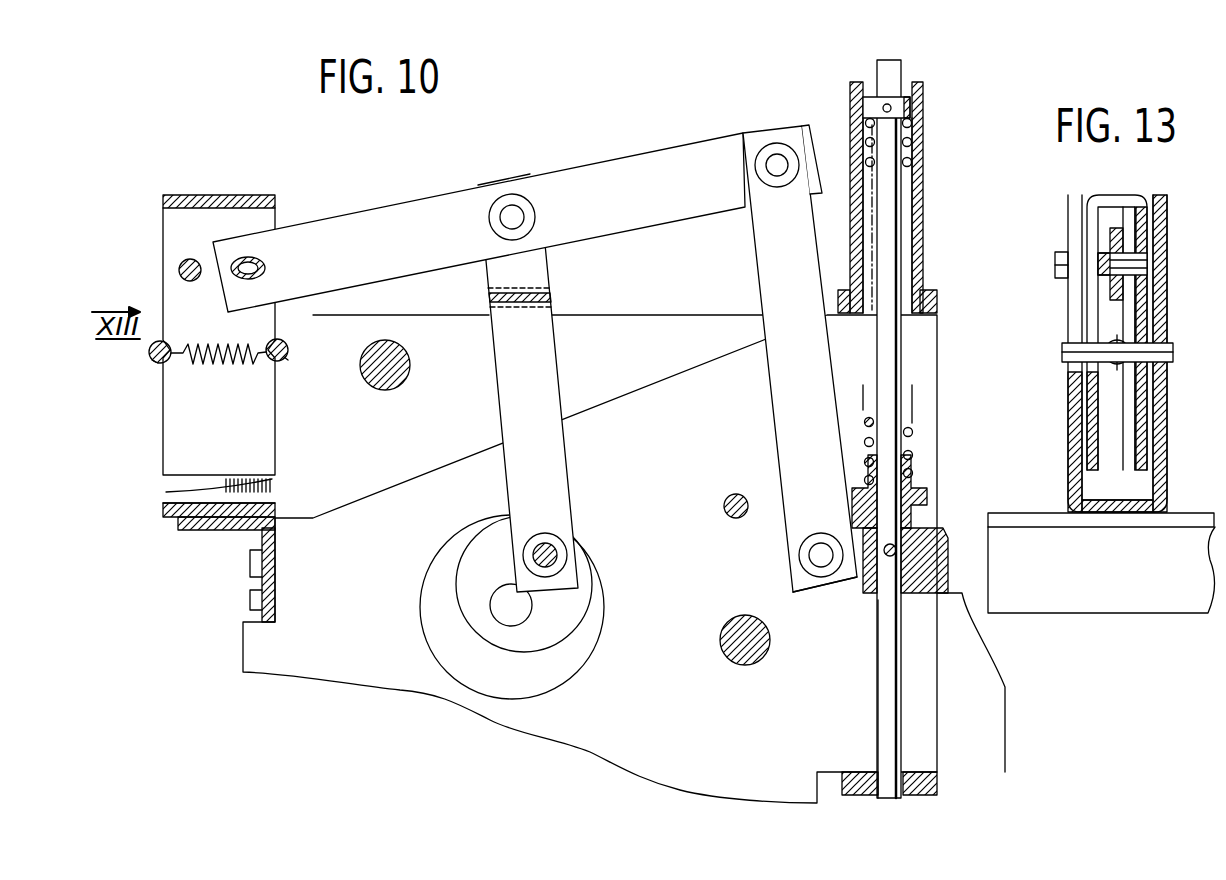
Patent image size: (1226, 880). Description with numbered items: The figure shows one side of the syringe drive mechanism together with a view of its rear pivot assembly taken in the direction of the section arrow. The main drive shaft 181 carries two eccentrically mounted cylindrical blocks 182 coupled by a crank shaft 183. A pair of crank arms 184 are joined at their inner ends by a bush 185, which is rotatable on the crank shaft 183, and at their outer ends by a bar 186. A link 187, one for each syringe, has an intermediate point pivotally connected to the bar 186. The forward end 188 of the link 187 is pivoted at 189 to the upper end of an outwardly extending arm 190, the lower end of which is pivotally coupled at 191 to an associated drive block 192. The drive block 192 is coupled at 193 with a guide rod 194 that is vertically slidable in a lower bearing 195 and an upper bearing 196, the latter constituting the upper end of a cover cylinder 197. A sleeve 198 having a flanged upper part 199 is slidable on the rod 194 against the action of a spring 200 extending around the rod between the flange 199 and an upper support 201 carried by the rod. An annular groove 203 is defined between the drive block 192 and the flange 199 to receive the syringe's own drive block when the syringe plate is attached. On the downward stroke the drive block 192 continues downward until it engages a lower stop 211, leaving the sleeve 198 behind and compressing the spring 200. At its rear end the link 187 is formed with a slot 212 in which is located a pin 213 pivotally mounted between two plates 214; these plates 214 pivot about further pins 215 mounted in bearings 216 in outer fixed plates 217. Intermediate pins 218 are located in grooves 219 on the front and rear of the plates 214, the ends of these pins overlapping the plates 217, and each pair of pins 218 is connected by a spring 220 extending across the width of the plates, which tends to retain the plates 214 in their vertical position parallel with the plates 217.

In FIG. 10, the main drive shaft 181 is at (507, 611).
In FIG. 10, the eccentrically mounted cylindrical block 182 is at (566, 613).
In FIG. 10, the crank shaft 183 is at (560, 552).
In FIG. 10, the crank arm 184 is at (546, 500).
In FIG. 10, the bush 185 is at (552, 545).
In FIG. 10, the bar 186 is at (512, 215).
In FIG. 10, the link 187 is at (619, 170).
In FIG. 13, the link 187 is at (1130, 232).
In FIG. 10, the forward end of link 188 is at (818, 157).
In FIG. 10, the pivot 189 is at (777, 163).
In FIG. 10, the outwardly extending arm 190 is at (790, 346).
In FIG. 10, the pivotal coupling 191 is at (820, 556).
In FIG. 10, the drive block 192 is at (822, 588).
In FIG. 10, the coupling 193 is at (885, 560).
In FIG. 10, the guide rod 194 is at (889, 638).
In FIG. 10, the lower bearing 195 is at (878, 778).
In FIG. 10, the upper bearing 196 is at (904, 95).
In FIG. 10, the cover cylinder 197 is at (922, 165).
In FIG. 10, the sleeve 198 is at (913, 513).
In FIG. 10, the flanged upper part 199 is at (912, 488).
In FIG. 10, the spring 200 is at (905, 218).
In FIG. 10, the upper support 201 is at (910, 108).
In FIG. 10, the annular groove 203 is at (860, 510).
In FIG. 10, the lower stop 211 is at (878, 782).
In FIG. 10, the slot 212 is at (238, 280).
In FIG. 10, the pin 213 is at (266, 265).
In FIG. 13, the pin 213 is at (1135, 263).
In FIG. 10, the plate 214 is at (266, 196).
In FIG. 13, the plate 214 is at (1105, 197).
In FIG. 10, the further pin 215 is at (190, 259).
In FIG. 13, the further pin 215 is at (1100, 284).
In FIG. 13, the bearing 216 is at (1060, 252).
In FIG. 10, the outer fixed plate 217 is at (180, 487).
In FIG. 13, the outer fixed plate 217 is at (1160, 196).
In FIG. 10, the intermediate pin 218 is at (150, 352).
In FIG. 13, the intermediate pin 218 is at (1150, 343).
In FIG. 10, the groove 219 is at (156, 362).
In FIG. 13, the groove 219 is at (1174, 352).
In FIG. 10, the spring 220 is at (240, 358).
In FIG. 13, the spring 220 is at (1128, 362).